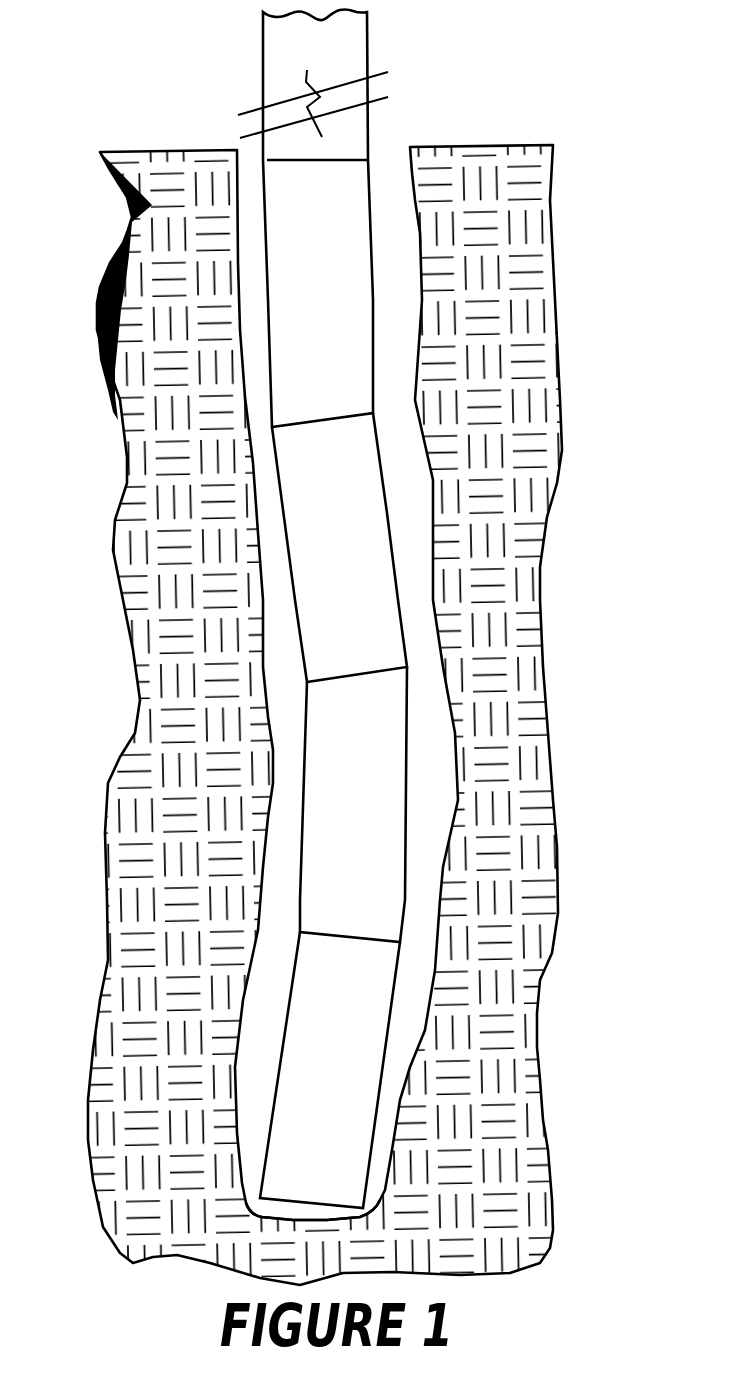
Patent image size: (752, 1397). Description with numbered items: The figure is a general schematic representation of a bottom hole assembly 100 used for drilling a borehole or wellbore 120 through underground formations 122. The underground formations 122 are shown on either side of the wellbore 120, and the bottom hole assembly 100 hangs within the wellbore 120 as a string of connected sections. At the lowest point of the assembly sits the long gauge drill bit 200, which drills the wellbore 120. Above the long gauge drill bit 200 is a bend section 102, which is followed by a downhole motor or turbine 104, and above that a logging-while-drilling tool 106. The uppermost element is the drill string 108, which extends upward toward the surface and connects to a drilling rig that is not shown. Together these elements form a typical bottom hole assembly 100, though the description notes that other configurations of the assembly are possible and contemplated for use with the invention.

The bottom hole assembly 100 is at (343, 684).
The bend section 102 is at (408, 807).
The downhole motor or turbine 104 is at (387, 517).
The logging-while-drilling tool 106 is at (373, 265).
The drill string 108 is at (263, 53).
The borehole 120 is at (303, 1210).
The underground formations 122 is at (148, 980).
The long gauge drill bit 200 is at (383, 1062).